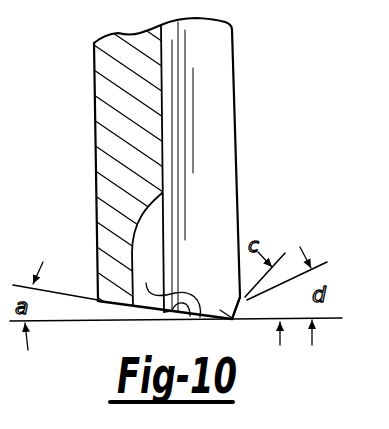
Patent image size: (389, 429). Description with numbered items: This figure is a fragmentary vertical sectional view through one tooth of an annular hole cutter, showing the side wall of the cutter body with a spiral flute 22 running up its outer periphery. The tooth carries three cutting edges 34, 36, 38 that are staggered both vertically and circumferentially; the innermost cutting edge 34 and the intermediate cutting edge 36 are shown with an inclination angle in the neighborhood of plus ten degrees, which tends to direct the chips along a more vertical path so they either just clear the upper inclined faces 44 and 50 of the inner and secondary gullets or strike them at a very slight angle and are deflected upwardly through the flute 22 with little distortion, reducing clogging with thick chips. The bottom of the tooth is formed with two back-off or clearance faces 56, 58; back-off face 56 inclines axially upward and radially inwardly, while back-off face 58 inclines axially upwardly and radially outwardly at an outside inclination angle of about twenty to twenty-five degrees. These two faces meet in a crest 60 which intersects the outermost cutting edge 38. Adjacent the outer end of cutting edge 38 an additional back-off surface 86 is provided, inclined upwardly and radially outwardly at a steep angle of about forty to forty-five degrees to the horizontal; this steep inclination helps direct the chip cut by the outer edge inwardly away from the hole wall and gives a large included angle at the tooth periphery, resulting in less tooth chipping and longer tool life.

The spiral flute 22 is at (232, 182).
The cutting edge 34 is at (115, 307).
The cutting edge 36 is at (143, 310).
The cutting edge 38 is at (168, 287).
The upper inclined face 44 is at (112, 258).
The upper inclined face 50 is at (143, 228).
The back-off face 56 is at (171, 316).
The back-off face 58 is at (220, 310).
The crest 60 is at (200, 318).
The additional back-off surface 86 is at (232, 316).